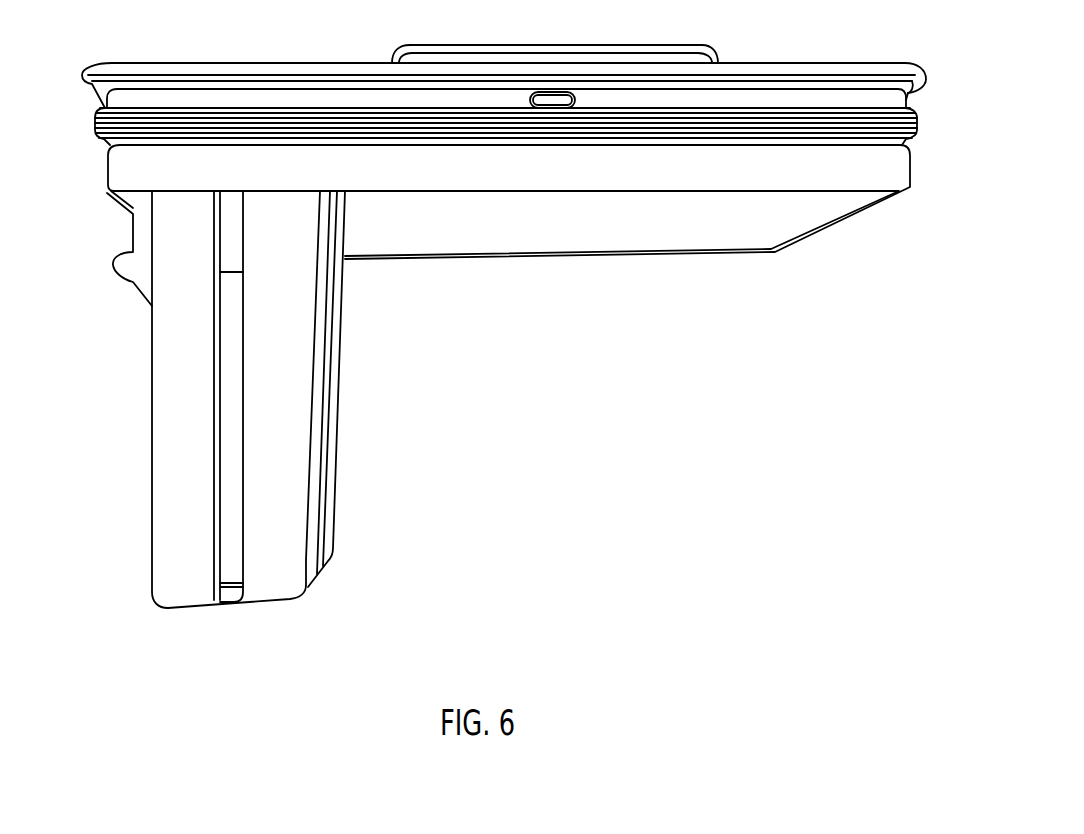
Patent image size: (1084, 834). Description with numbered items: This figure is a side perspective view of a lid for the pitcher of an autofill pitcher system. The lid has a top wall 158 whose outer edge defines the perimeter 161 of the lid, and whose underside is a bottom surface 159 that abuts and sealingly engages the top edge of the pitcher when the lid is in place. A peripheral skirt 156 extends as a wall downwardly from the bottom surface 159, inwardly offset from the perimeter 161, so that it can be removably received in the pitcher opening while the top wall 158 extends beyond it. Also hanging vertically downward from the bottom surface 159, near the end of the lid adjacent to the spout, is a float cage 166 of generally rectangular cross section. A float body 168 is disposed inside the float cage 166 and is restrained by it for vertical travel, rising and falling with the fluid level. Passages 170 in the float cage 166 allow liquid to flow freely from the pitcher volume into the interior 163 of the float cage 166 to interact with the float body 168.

The peripheral skirt 156 is at (890, 163).
The top wall 158 is at (882, 70).
The bottom surface 159 is at (910, 95).
The perimeter 161 is at (115, 62).
The interior of the float cage 163 is at (227, 205).
The float cage 166 is at (178, 569).
The float body 168 is at (232, 565).
The passages 170 is at (230, 235).